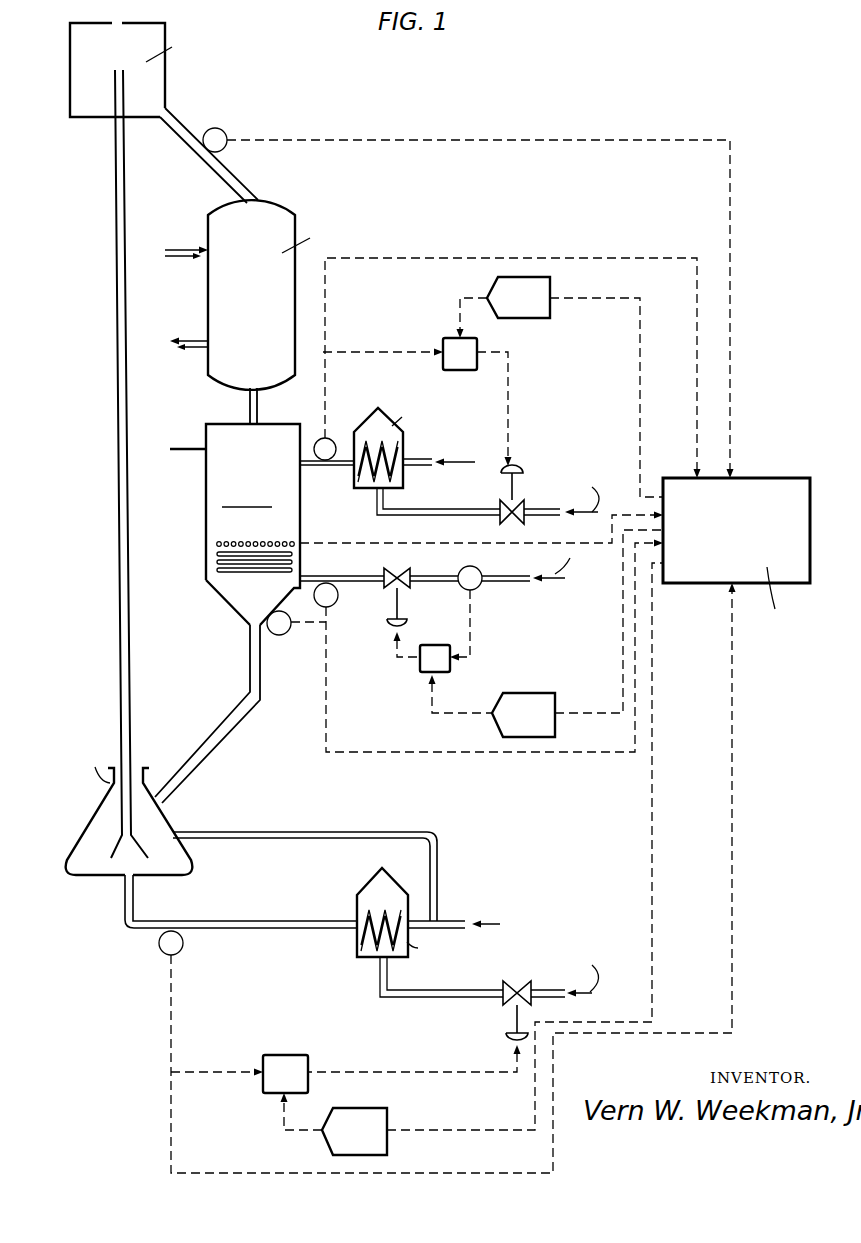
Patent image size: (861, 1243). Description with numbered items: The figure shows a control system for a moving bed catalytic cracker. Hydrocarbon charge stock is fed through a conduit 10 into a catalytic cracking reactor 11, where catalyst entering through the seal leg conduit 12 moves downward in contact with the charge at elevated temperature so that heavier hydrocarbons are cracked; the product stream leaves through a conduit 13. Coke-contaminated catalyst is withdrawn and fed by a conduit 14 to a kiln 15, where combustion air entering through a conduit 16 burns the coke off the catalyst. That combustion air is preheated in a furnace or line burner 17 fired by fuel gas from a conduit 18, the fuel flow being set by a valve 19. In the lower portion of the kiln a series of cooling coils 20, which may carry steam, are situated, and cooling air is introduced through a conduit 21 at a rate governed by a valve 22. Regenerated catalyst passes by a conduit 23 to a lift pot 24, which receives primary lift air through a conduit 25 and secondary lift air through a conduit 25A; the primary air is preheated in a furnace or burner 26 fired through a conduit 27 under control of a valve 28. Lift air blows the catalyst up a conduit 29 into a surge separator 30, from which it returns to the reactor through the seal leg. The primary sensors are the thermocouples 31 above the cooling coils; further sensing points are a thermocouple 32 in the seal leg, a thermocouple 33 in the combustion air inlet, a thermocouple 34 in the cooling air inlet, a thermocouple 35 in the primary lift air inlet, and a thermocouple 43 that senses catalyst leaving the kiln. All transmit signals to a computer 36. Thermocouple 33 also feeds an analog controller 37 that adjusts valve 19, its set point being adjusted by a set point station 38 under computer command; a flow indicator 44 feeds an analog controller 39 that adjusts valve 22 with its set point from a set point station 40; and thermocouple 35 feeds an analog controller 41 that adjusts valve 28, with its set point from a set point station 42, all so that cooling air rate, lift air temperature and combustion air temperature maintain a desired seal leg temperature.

The conduit 10 is at (188, 247).
The catalytic cracking reactor 11 is at (262, 301).
The seal leg conduit 12 is at (204, 169).
The conduit 13 is at (196, 338).
The conduit 14 is at (250, 400).
The kiln 15 is at (268, 478).
The conduit 16 is at (332, 468).
The furnace or line burner 17 is at (394, 422).
The conduit 18 is at (482, 518).
The valve 19 is at (521, 470).
The cooling coils 20 is at (233, 572).
The conduit 21 is at (318, 582).
The valve 22 is at (395, 627).
The conduit 23 is at (227, 720).
The lift pot 24 is at (92, 813).
The conduit 25 is at (272, 931).
The conduit 25A is at (223, 830).
The furnace or burner 26 is at (368, 884).
The conduit 27 is at (378, 977).
The valve 28 is at (508, 1037).
The conduit 29 is at (113, 483).
The surge separator 30 is at (70, 65).
The thermocouples 31 is at (290, 541).
The thermocouple 32 is at (218, 128).
The thermocouple 33 is at (330, 436).
The thermocouple 34 is at (338, 599).
The thermocouple 35 is at (158, 947).
The computer 36 is at (750, 538).
The analog controller 37 is at (453, 344).
The set point station 38 is at (560, 387).
The analog controller 39 is at (432, 650).
The set point station 40 is at (527, 712).
The analog controller 41 is at (280, 1060).
The set point station 42 is at (472, 859).
The thermocouple 43 is at (280, 636).
The flow indicator 44 is at (482, 586).